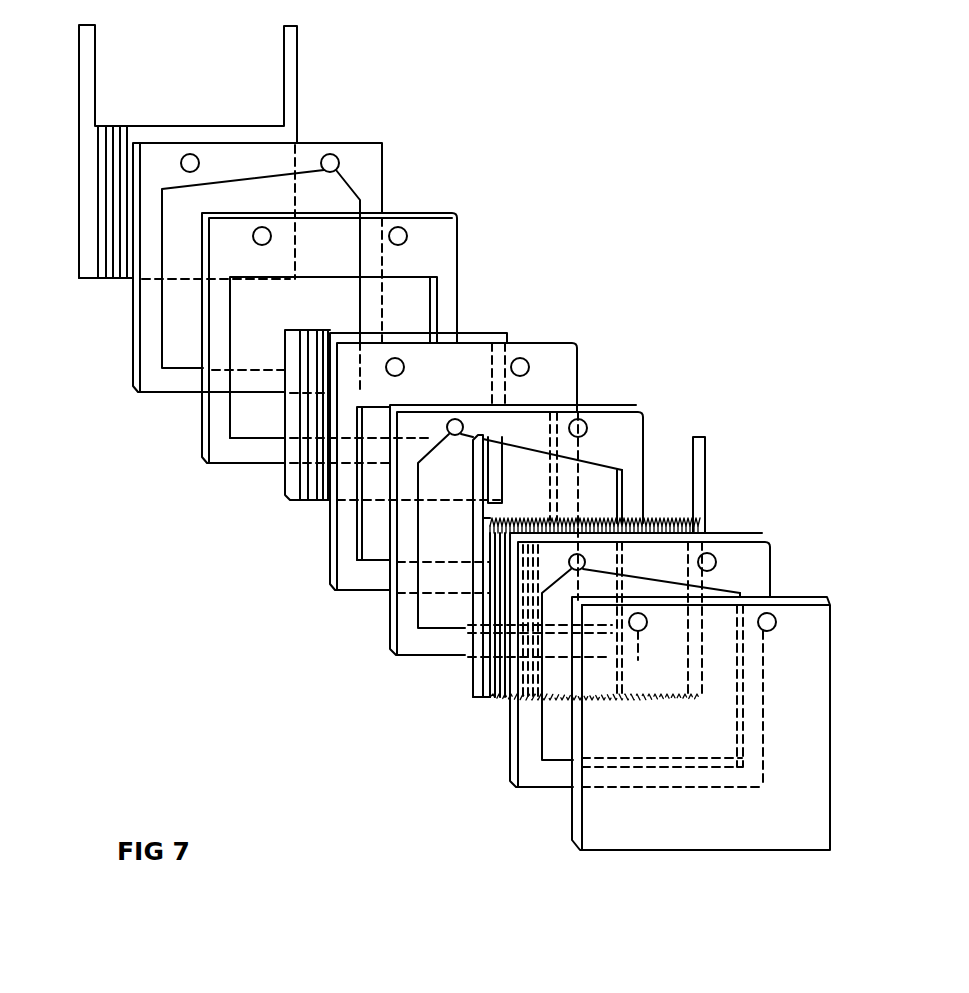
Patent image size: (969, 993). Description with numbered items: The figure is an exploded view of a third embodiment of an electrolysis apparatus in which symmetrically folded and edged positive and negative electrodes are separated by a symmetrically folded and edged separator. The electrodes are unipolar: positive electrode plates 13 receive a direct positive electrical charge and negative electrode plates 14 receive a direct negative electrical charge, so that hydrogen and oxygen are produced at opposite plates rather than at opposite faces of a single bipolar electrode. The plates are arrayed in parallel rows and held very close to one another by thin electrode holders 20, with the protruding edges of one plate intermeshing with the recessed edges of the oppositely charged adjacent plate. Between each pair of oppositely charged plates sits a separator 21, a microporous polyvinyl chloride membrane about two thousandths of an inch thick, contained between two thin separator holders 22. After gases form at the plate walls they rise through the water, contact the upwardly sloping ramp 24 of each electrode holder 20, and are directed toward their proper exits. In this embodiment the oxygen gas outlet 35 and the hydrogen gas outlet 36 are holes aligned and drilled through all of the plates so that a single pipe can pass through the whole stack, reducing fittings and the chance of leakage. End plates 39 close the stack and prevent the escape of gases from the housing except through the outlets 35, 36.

The positive electrode plate 13 is at (88, 255).
The negative electrode plate 14 is at (480, 683).
The electrode holder 20 is at (383, 163).
The separator 21 is at (317, 480).
The separator holder 22 is at (447, 253).
The upwardly sloping ramp 24 is at (602, 467).
The oxygen gas outlet 35 is at (776, 623).
The hydrogen gas outlet 36 is at (637, 631).
The end plate 39 is at (678, 771).